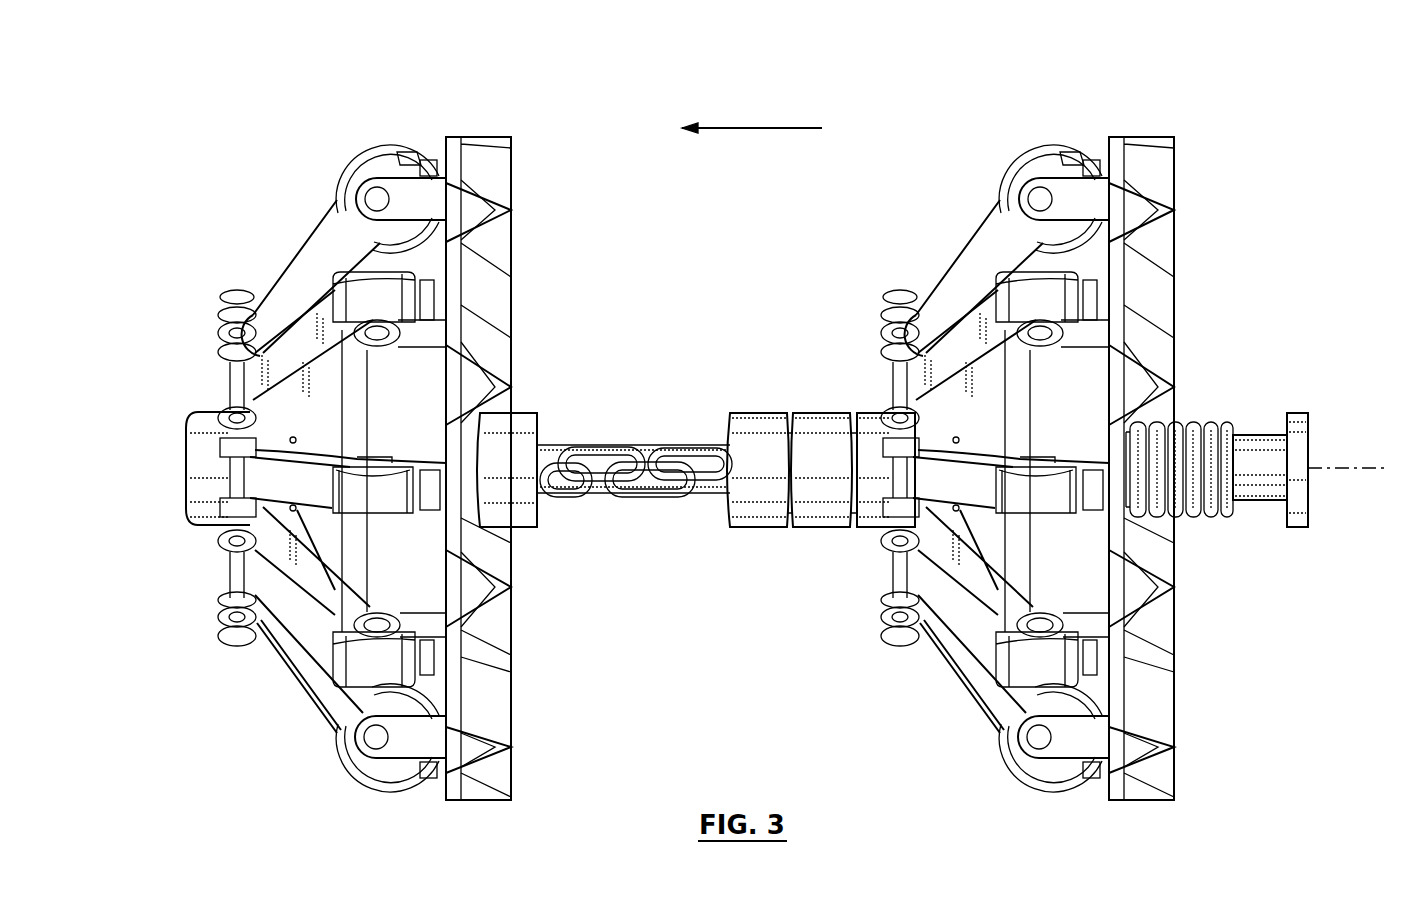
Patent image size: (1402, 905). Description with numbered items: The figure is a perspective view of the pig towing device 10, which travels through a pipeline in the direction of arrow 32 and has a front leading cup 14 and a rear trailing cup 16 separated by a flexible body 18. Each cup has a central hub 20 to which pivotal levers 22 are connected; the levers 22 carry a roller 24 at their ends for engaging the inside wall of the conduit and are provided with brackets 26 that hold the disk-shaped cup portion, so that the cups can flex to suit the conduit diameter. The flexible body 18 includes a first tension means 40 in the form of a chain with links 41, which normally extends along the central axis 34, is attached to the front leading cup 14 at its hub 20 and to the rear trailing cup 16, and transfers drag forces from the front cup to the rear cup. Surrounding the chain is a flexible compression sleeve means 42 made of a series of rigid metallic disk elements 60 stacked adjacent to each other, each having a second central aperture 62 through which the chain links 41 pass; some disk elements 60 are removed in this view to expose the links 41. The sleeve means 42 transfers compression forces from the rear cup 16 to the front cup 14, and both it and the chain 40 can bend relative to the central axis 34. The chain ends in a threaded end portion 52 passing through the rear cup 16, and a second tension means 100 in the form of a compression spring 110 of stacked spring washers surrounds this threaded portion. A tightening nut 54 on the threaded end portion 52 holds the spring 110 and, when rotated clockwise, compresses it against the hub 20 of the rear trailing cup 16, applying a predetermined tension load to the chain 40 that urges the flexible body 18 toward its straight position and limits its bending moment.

The pig towing device 10 is at (716, 756).
The front leading cup 14 is at (235, 722).
The rear trailing cup 16 is at (955, 706).
The flexible body 18 is at (758, 553).
The hub 20 is at (200, 414).
The pivotal levers 22 is at (319, 257).
The roller 24 is at (362, 165).
The brackets 26 is at (422, 167).
The arrow 32 is at (802, 128).
The central axis 34 is at (1342, 467).
The first tension means 40 is at (633, 506).
The links 41 is at (594, 450).
The flexible compression sleeve means 42 is at (808, 395).
The threaded end portion 52 is at (1213, 423).
The tightening nut 54 is at (1302, 430).
The metallic disk elements 60 is at (742, 520).
The second central aperture 62 is at (705, 487).
The second tension means 100 is at (1197, 397).
The compression spring 110 is at (1212, 513).